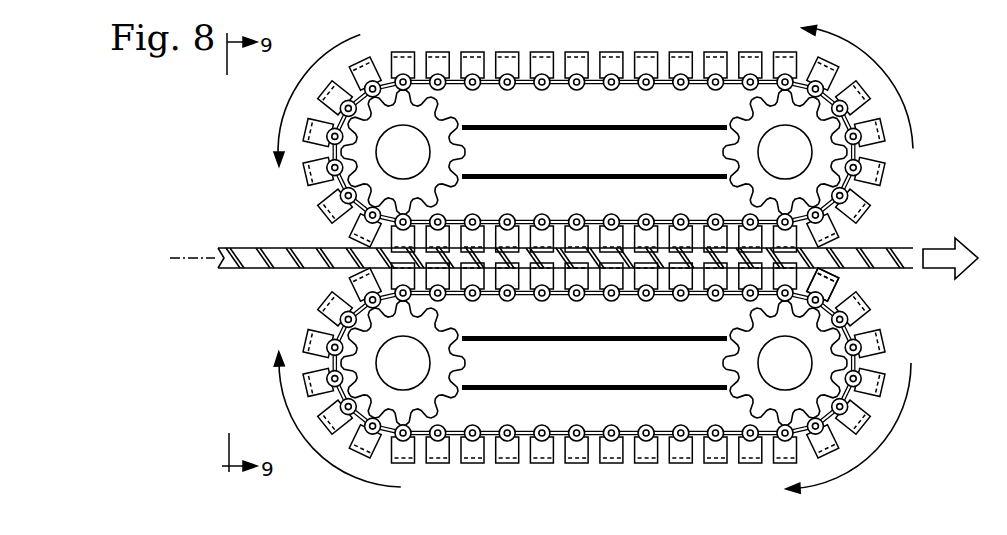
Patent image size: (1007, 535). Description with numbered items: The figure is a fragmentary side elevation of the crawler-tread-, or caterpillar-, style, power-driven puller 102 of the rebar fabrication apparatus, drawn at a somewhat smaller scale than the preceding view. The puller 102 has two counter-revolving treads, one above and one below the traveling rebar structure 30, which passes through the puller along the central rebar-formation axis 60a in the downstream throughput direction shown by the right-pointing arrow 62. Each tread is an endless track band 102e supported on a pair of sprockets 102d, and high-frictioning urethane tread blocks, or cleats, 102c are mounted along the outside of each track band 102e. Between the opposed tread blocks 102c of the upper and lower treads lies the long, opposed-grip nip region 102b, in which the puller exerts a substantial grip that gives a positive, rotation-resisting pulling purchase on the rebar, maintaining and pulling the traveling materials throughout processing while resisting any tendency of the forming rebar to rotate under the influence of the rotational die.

The puller 102 is at (612, 247).
The nip region 102b is at (859, 282).
The tread blocks 102c is at (578, 51).
The sprocket 102d is at (471, 153).
The track band 102e is at (620, 93).
The helically wrapped strand 30 is at (247, 242).
The rebar-formation axis 60a is at (200, 264).
The throughput direction arrow 62 is at (961, 244).